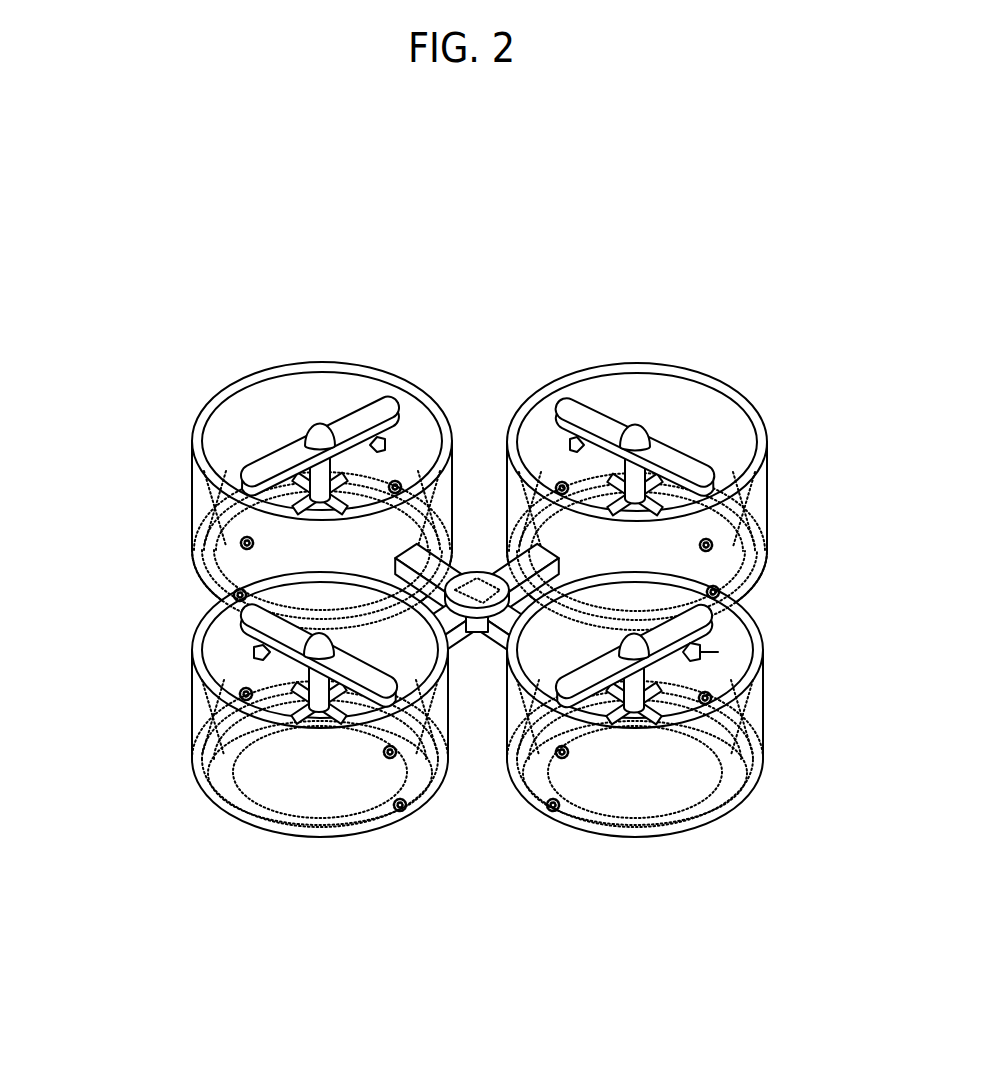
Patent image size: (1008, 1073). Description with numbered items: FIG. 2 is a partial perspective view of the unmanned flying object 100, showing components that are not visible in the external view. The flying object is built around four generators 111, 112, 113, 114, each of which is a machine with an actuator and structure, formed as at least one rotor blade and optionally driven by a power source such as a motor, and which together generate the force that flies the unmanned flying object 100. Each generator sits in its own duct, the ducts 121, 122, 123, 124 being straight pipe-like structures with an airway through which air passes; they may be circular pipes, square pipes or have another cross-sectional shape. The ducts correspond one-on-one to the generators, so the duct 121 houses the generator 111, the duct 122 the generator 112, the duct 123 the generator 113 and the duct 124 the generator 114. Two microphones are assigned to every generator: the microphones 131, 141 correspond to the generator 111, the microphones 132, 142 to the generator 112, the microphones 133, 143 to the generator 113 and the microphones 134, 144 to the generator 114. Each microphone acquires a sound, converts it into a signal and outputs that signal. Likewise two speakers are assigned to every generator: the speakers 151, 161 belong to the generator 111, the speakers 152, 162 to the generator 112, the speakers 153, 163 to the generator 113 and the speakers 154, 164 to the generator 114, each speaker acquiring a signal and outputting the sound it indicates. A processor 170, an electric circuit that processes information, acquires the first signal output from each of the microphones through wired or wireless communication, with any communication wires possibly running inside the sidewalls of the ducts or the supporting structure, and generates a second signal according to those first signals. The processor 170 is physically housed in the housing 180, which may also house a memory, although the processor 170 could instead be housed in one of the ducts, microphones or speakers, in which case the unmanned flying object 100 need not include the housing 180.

The unmanned flying object 100 is at (757, 157).
The generator 111 is at (332, 418).
The generator 112 is at (690, 446).
The generator 113 is at (243, 615).
The generator 114 is at (702, 632).
The duct 121 is at (195, 421).
The duct 122 is at (717, 380).
The duct 123 is at (228, 812).
The duct 124 is at (728, 808).
The microphone 131 is at (397, 487).
The microphone 132 is at (562, 488).
The microphone 133 is at (245, 694).
The microphone 134 is at (705, 700).
The microphone 141 is at (240, 595).
The microphone 142 is at (714, 592).
The microphone 143 is at (400, 805).
The microphone 144 is at (553, 805).
The speaker 151 is at (372, 437).
The speaker 152 is at (580, 445).
The speaker 153 is at (253, 653).
The speaker 154 is at (720, 652).
The speaker 161 is at (247, 543).
The speaker 162 is at (708, 545).
The speaker 163 is at (390, 753).
The speaker 164 is at (562, 752).
The processor 170 is at (468, 578).
The housing 180 is at (477, 633).